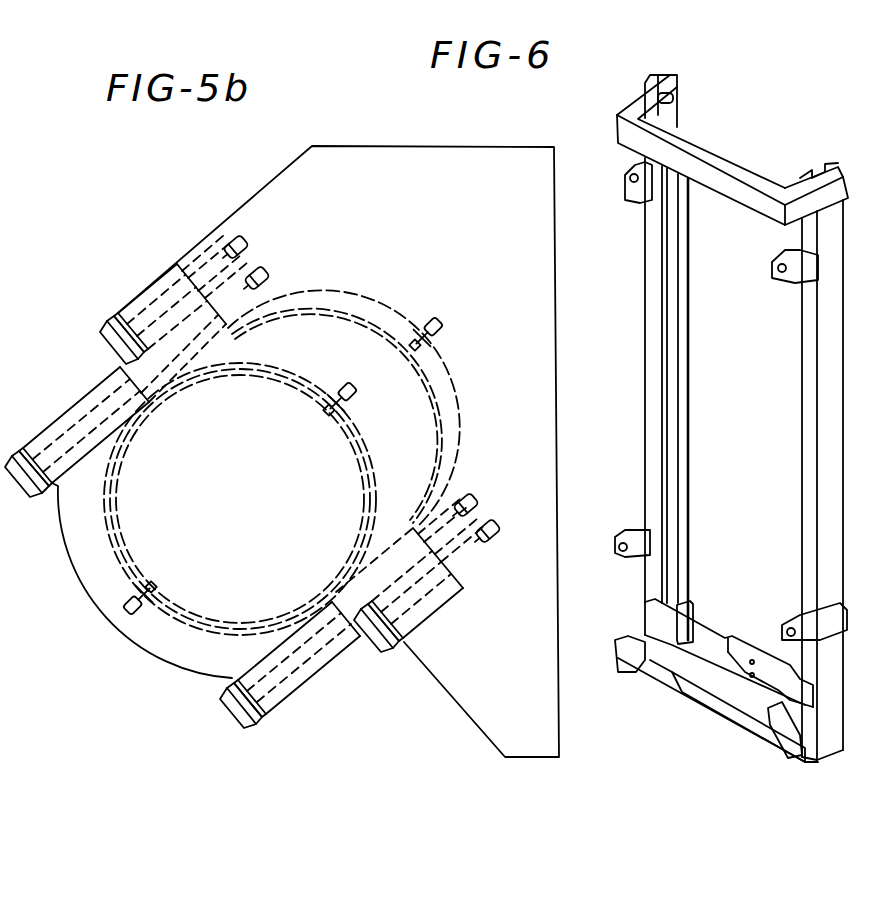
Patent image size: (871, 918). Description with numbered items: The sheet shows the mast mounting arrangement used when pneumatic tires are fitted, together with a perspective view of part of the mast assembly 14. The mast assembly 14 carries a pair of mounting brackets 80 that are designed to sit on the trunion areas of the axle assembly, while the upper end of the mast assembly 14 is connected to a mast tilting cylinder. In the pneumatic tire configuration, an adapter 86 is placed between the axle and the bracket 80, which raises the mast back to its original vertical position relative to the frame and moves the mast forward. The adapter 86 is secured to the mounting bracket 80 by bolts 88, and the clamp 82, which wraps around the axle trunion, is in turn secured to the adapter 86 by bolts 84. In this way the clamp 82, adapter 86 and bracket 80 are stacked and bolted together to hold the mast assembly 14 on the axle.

In FIG. 6, the mast assembly 14 is at (714, 417).
In FIG. 5b, the mounting bracket 80 is at (417, 228).
In FIG. 6, the mounting bracket 80 is at (733, 717).
In FIG. 5b, the clamp 82 is at (142, 609).
In FIG. 5b, the bolts 84 is at (262, 699).
In FIG. 5b, the adapter 86 is at (363, 340).
In FIG. 5b, the bolts 88 is at (418, 632).